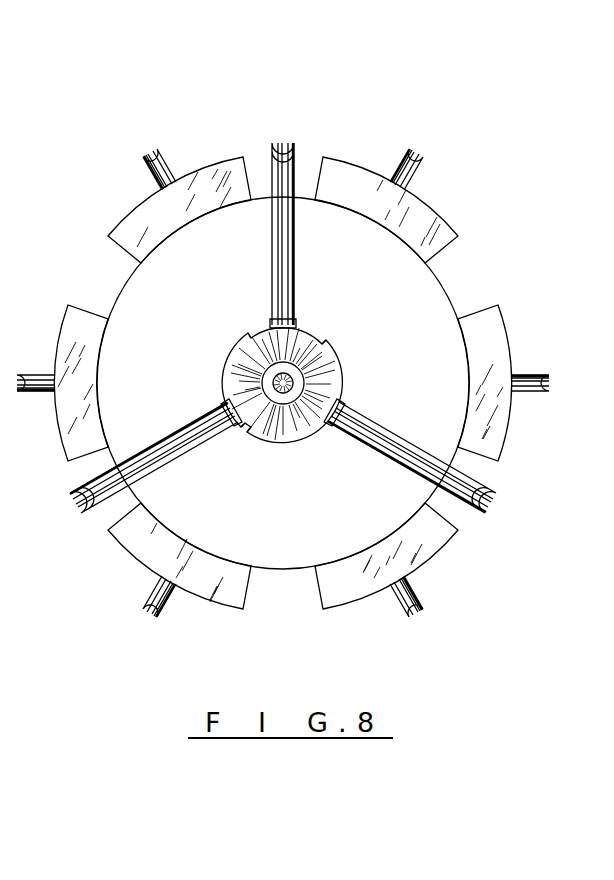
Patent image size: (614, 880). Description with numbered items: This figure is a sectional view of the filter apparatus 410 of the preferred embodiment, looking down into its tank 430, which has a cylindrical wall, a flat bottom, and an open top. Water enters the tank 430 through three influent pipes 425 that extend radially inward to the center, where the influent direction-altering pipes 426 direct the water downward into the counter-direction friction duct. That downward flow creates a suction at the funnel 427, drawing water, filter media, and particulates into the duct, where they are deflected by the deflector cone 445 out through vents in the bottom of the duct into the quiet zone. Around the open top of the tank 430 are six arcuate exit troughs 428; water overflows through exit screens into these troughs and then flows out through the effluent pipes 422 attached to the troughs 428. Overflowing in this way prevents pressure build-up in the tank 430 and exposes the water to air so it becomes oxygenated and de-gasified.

The filter apparatus 410 is at (363, 89).
The effluent pipes 422 is at (165, 165).
The influent pipes 425 is at (296, 158).
The influent direction-altering pipes 426 is at (292, 322).
The funnel 427 is at (341, 362).
The exit troughs 428 is at (437, 213).
The tank 430 is at (117, 292).
The deflector cone 445 is at (271, 372).